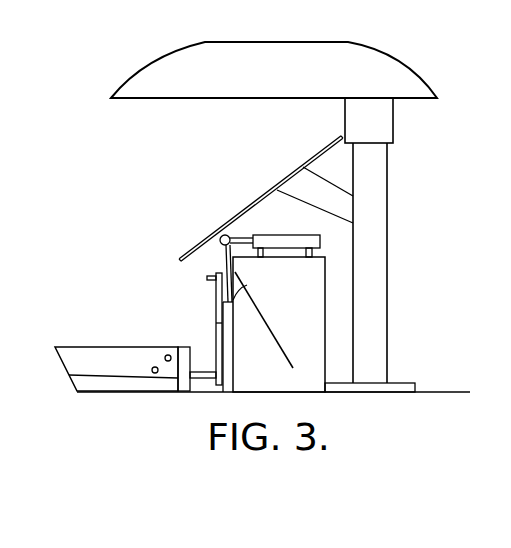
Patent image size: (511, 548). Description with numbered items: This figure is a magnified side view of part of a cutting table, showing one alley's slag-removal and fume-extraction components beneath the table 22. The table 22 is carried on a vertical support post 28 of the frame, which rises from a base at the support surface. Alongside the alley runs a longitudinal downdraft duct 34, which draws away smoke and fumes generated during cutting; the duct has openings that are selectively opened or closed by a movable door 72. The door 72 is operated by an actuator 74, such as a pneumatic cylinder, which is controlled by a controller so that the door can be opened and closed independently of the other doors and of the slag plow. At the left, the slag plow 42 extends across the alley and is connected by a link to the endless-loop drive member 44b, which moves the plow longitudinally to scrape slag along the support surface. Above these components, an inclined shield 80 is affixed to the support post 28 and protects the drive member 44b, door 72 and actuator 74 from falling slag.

The table 22 is at (390, 78).
The support post 28 is at (377, 195).
The downdraft duct 34 is at (322, 313).
The slag plow 42 is at (123, 358).
The drive member 44b is at (220, 340).
The door 72 is at (266, 320).
The actuator 74 is at (283, 242).
The shield 80 is at (262, 195).